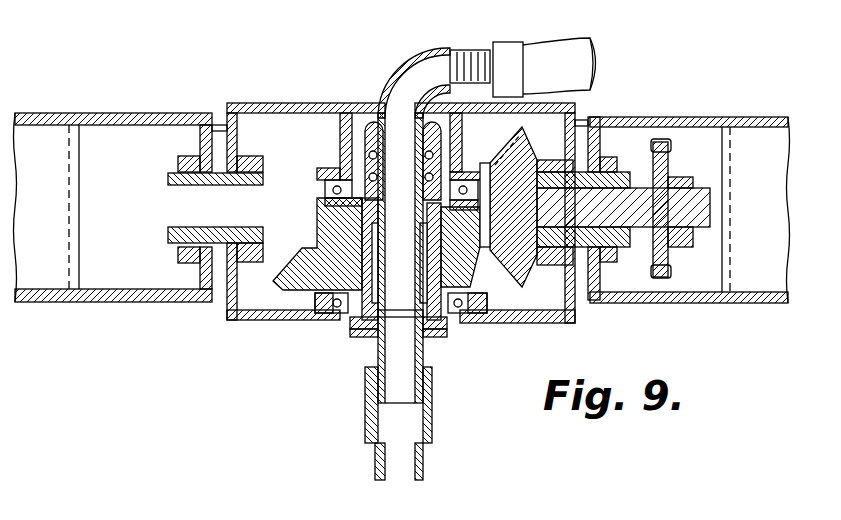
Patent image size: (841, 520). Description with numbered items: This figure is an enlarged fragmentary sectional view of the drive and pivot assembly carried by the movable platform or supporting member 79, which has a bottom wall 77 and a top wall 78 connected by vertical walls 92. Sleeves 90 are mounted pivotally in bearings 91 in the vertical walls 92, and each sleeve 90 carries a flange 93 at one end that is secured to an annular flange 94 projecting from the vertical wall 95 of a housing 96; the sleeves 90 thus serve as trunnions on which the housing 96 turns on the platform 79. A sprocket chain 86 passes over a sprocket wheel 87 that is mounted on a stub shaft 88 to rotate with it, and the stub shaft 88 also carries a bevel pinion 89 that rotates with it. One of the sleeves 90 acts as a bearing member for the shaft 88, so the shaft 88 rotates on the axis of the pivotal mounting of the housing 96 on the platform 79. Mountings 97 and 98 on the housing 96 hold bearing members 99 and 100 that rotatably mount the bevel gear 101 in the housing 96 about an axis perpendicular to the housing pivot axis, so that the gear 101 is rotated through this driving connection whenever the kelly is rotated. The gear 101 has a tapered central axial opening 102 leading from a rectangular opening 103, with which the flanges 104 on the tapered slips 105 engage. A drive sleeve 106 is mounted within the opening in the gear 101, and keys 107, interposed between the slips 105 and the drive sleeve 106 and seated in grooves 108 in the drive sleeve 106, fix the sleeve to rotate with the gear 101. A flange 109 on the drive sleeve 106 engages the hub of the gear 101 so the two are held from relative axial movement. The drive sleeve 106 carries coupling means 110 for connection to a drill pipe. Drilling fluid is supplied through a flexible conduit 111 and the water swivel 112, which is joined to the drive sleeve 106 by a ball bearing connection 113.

The bottom wall 77 is at (140, 302).
The top wall 78 is at (112, 113).
The platform or supporting member 79 is at (710, 128).
The sprocket chain 86 is at (672, 273).
The sprocket wheel 87 is at (670, 163).
The stub shaft 88 is at (708, 213).
The bevel pinion 89 is at (518, 152).
The sleeves 90 is at (190, 180).
The bearings 91 is at (178, 162).
The vertical walls 92 is at (200, 272).
The flange 93 is at (263, 164).
The annular flange 94 is at (245, 262).
The vertical wall 95 is at (218, 122).
The housing 96 is at (262, 123).
The mounting 97 is at (484, 311).
The mounting 98 is at (470, 178).
The bearing member 99 is at (333, 306).
The bearing member 100 is at (318, 190).
The bevel gear 101 is at (278, 281).
The central axial opening 102 is at (365, 240).
The rectangular opening 103 is at (355, 212).
The flanges 104 is at (437, 220).
The slips 105 is at (427, 266).
The drive sleeve 106 is at (417, 315).
The keys 107 is at (350, 323).
The grooves 108 is at (384, 242).
The flange 109 is at (362, 334).
The coupling means 110 is at (432, 413).
The flexible conduit 111 is at (576, 46).
The water swivel 112 is at (428, 50).
The ball bearing connection 113 is at (369, 122).